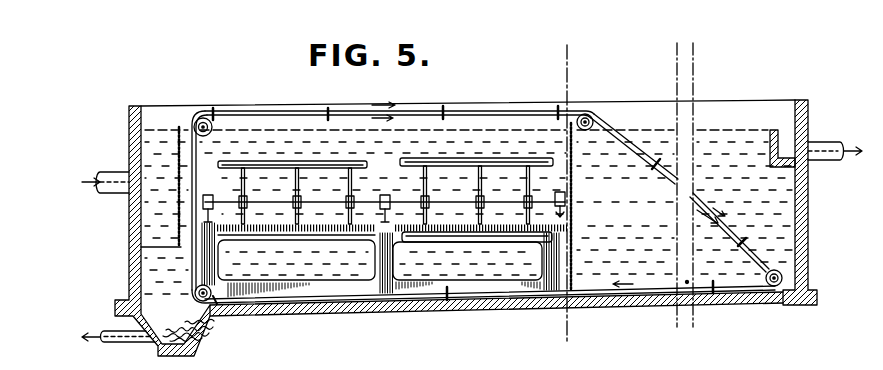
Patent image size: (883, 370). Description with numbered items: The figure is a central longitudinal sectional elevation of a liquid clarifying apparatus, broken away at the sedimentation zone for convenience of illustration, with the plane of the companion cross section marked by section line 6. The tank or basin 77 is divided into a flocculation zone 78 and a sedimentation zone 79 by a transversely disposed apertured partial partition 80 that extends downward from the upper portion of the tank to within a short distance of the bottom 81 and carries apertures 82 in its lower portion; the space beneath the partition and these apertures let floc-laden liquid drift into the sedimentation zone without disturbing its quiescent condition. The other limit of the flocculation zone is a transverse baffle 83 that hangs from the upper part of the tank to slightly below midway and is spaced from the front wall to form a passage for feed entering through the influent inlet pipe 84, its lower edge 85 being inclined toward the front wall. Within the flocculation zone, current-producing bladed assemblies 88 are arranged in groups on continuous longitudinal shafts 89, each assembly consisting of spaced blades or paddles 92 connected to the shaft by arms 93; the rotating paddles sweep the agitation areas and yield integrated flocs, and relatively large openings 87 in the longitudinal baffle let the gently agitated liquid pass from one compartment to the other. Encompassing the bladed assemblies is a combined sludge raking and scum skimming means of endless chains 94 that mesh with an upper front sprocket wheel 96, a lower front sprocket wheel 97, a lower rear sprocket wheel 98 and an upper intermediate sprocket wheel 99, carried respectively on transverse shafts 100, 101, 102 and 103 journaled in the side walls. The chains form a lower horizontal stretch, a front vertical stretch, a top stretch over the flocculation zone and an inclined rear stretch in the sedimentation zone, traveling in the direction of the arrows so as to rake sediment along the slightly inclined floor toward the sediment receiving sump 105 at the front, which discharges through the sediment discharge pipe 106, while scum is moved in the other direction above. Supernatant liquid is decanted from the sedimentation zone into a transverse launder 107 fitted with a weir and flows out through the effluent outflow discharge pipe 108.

The section line 6- 6 is at (567, 56).
The tank or basin 77 is at (129, 210).
The flocculation zone 78 is at (384, 198).
The sedimentation zone 79 is at (717, 208).
The apertured partial partition 80 is at (573, 199).
The bottom 81 is at (547, 305).
The apertures 82 is at (573, 230).
The transverse baffle or partition 83 is at (191, 123).
The influent inlet pipe 84 is at (101, 172).
The lower edge of baffle 85 is at (141, 247).
The openings or apertures 87 is at (472, 272).
The current-producing bladed assemblies 88 is at (465, 160).
The longitudinal shafts 89 is at (450, 203).
The blades or paddles 92 is at (323, 162).
The arms 93 is at (294, 186).
The endless belts or chains 94 is at (493, 110).
The upper front sprocket wheel 96 is at (399, 122).
The lower front sprocket wheel 97 is at (209, 290).
The lower rear sprocket wheel 98 is at (768, 286).
The upper intermediate sprocket wheel 99 is at (680, 189).
The transverse shaft 100 is at (205, 120).
The transverse shaft 101 is at (214, 302).
The transverse shaft 102 is at (783, 272).
The transverse shaft 103 is at (598, 99).
The sediment receiving sump 105 is at (208, 322).
The sediment discharge pipe 106 is at (124, 333).
The transverse launder 107 is at (780, 138).
The effluent outflow discharge pipe 108 is at (831, 138).